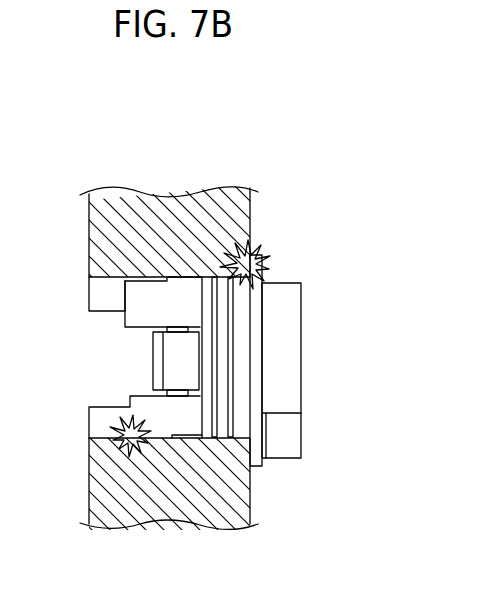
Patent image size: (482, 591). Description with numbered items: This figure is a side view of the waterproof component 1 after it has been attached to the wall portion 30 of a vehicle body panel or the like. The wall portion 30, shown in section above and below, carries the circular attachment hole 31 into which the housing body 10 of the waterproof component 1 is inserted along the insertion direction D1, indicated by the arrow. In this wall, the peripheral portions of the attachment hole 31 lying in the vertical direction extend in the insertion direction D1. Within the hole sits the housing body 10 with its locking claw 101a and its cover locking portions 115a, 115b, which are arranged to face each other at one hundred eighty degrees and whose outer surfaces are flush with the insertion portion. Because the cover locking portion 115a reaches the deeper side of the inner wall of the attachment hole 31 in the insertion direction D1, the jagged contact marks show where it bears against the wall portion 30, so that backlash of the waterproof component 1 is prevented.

The wall portion 30 is at (207, 190).
The attachment hole 31 is at (100, 278).
The cover locking portion 115a is at (137, 301).
The lower holding arm 115b is at (130, 410).
The locking claw 101a is at (161, 365).
The waterproof component 1 is at (315, 363).
The housing body 10 is at (287, 461).
The insertion direction D1 is at (375, 273).